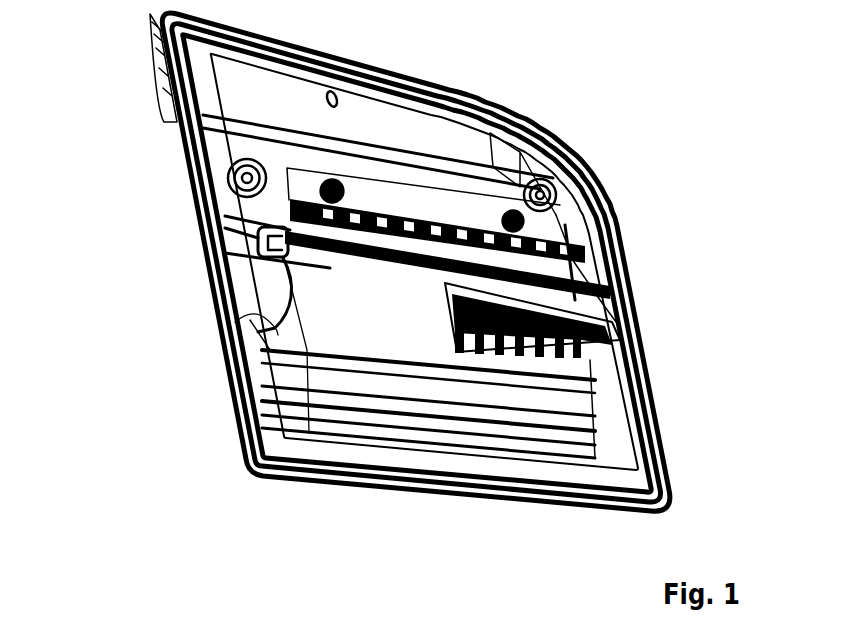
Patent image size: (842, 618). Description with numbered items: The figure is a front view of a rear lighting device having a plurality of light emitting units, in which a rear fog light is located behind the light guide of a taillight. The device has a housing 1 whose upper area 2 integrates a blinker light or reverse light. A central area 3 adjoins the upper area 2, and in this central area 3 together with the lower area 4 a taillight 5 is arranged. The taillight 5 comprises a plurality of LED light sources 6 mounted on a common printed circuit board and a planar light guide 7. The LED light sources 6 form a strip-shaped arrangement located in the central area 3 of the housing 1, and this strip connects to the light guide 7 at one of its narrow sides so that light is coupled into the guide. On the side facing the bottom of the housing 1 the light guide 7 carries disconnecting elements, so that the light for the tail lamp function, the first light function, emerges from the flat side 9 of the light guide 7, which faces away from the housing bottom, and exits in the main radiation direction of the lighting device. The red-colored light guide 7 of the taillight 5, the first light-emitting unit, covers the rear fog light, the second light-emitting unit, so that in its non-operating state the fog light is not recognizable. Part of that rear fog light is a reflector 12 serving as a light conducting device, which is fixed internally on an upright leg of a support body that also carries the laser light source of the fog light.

The housing 1 is at (245, 465).
The upper area 2 is at (243, 110).
The central area 3 is at (194, 291).
The lower area 4 is at (211, 406).
The taillight 5 is at (674, 405).
The LED light sources 6 is at (426, 200).
The light guide 7 is at (263, 317).
The flat side 9 is at (353, 341).
The reflector 12 is at (634, 330).